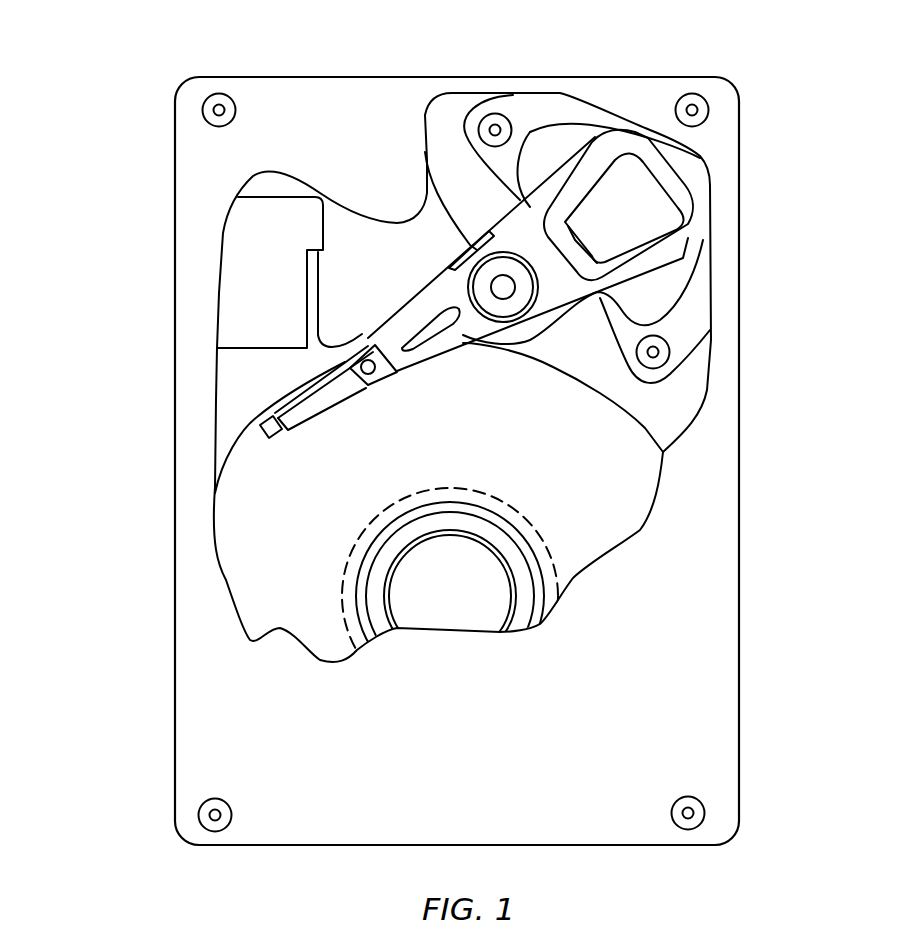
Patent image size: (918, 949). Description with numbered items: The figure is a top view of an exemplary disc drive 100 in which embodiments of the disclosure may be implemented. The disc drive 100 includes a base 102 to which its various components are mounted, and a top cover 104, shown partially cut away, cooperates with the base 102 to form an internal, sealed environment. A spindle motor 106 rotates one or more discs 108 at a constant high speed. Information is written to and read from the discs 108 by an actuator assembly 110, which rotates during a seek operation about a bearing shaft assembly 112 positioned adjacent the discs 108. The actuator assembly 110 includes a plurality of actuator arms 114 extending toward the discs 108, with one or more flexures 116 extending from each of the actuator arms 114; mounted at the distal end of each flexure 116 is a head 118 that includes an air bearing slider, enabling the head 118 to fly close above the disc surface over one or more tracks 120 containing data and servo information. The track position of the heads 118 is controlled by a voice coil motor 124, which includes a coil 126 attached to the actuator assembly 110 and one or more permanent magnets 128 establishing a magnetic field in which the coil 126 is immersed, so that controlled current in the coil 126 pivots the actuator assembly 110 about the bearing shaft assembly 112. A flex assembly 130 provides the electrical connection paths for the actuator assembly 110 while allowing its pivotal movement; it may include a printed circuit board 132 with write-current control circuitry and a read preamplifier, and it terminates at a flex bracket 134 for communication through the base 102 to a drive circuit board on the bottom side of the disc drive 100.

The disc drive 100 is at (140, 60).
The base 102 is at (233, 364).
The top cover 104 is at (232, 713).
The spindle motor 106 is at (448, 597).
The discs 108 is at (602, 525).
The actuator assembly 110 is at (468, 330).
The bearing shaft assembly 112 is at (506, 289).
The actuator arms 114 is at (440, 357).
The flexures 116 is at (300, 413).
The head 118 is at (272, 437).
The tracks 120 is at (341, 598).
The voice coil motor 124 is at (567, 72).
The coil 126 is at (693, 207).
The permanent magnets 128 is at (531, 155).
The flex assembly 130 is at (417, 293).
The printed circuit board 132 is at (460, 232).
The flex bracket 134 is at (258, 263).